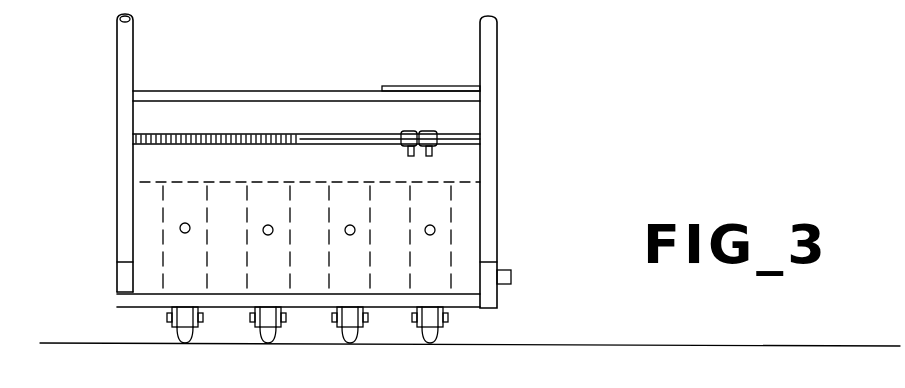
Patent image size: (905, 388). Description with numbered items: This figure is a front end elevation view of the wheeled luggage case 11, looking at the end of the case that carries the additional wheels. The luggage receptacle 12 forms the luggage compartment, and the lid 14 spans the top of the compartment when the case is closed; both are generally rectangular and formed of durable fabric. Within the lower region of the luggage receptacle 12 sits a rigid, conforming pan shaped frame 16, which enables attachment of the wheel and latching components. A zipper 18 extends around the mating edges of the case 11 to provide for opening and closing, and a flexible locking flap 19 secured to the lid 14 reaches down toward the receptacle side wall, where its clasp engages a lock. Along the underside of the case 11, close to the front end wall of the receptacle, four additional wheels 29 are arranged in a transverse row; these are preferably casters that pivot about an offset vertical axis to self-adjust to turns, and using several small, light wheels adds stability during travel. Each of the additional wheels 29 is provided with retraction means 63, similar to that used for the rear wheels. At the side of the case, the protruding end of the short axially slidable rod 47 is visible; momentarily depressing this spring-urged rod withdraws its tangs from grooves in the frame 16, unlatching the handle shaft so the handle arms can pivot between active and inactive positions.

The wheeled luggage case 11 is at (560, 168).
The luggage receptacle 12 is at (146, 160).
The lid 14 is at (253, 118).
The pan shaped frame 16 is at (163, 176).
The zipper 18 is at (401, 135).
The locking flap 19 is at (437, 85).
The additional wheels 29 is at (185, 340).
The axially slidable rod 47 is at (512, 277).
The retraction means 63 is at (188, 180).